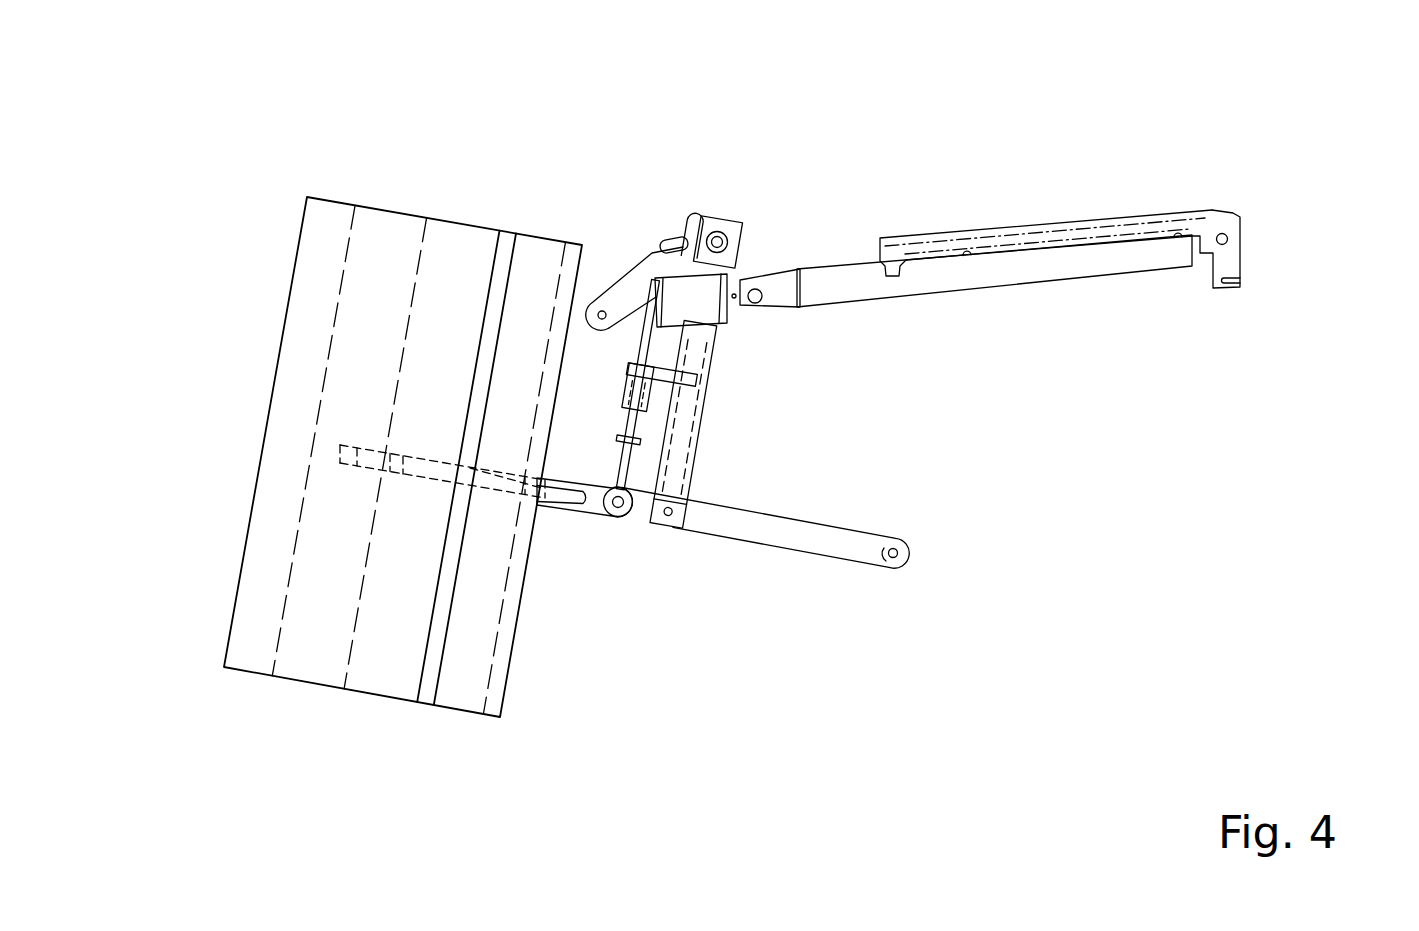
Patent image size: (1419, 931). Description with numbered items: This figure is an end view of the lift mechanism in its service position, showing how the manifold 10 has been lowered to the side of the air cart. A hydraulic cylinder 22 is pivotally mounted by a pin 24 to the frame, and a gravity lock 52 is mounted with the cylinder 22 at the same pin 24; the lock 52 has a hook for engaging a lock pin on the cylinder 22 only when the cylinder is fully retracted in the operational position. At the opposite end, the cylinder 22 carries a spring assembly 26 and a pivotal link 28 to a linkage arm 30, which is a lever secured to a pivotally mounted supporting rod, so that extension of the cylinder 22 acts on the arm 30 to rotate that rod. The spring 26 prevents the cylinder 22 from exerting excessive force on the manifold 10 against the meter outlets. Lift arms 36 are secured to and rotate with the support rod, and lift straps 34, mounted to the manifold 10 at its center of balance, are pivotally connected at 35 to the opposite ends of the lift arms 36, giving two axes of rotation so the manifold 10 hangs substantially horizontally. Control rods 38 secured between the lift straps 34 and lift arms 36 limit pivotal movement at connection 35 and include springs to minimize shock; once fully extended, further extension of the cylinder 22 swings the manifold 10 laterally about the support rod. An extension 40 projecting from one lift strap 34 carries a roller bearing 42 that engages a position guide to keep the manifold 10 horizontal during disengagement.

The manifold 10 is at (354, 509).
The hydraulic cylinder 22 is at (962, 318).
The pin 24 is at (1301, 218).
The spring assembly 26 is at (785, 178).
The pivotal link 28 is at (476, 182).
The linkage arm 30 is at (617, 200).
The lift straps 34 is at (633, 634).
The pivotal connection 35 is at (726, 602).
The lift arms 36 is at (770, 401).
The control rods 38 is at (434, 276).
The extension 40 is at (793, 595).
The roller bearing 42 is at (1002, 523).
The gravity lock 52 is at (1046, 175).